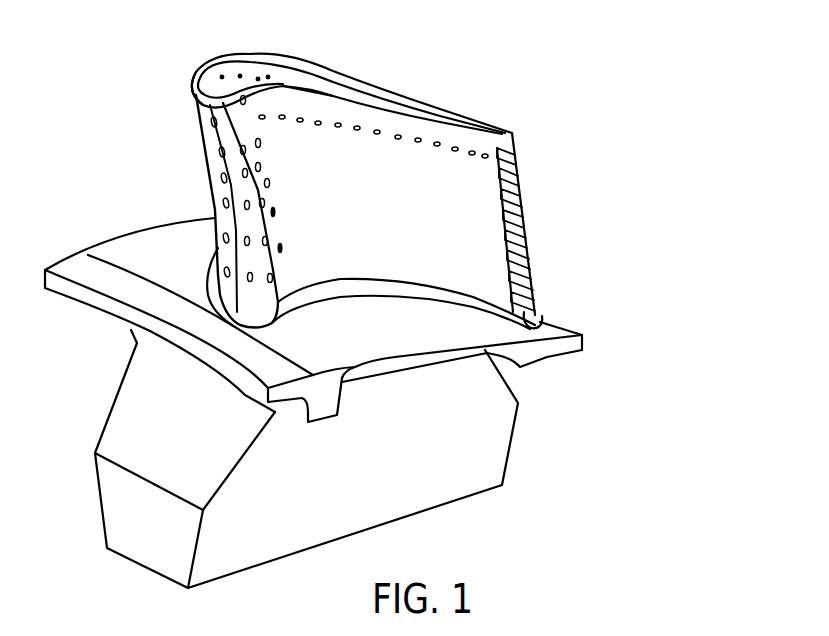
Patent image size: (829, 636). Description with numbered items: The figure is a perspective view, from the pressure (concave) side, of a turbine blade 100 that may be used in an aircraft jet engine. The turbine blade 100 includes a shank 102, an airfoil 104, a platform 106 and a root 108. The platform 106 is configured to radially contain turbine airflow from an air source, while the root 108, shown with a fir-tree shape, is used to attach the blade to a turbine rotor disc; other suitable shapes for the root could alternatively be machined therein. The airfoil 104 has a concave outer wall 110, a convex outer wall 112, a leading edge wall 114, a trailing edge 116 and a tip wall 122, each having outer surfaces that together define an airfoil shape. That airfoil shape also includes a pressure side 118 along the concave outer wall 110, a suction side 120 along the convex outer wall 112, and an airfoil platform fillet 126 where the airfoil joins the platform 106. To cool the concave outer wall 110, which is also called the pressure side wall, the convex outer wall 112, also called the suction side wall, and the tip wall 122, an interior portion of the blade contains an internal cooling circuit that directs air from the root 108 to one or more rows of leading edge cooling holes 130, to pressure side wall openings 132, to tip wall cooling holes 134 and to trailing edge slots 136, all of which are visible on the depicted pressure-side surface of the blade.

The turbine blade 100 is at (600, 134).
The shank 102 is at (372, 373).
The airfoil 104 is at (356, 165).
The platform 106 is at (385, 344).
The root 108 is at (157, 400).
The concave outer wall 110 is at (452, 145).
The convex outer wall 112 is at (353, 80).
The leading edge wall 114 is at (213, 144).
The trailing edge 116 is at (532, 200).
The pressure side 118 is at (387, 128).
The suction side 120 is at (255, 53).
The tip wall 122 is at (207, 88).
The airfoil platform fillet 126 is at (212, 270).
The leading edge cooling holes 130 is at (217, 206).
The pressure side wall openings 132 is at (297, 120).
The tip wall cooling holes 134 is at (220, 77).
The trailing edge slots 136 is at (513, 253).